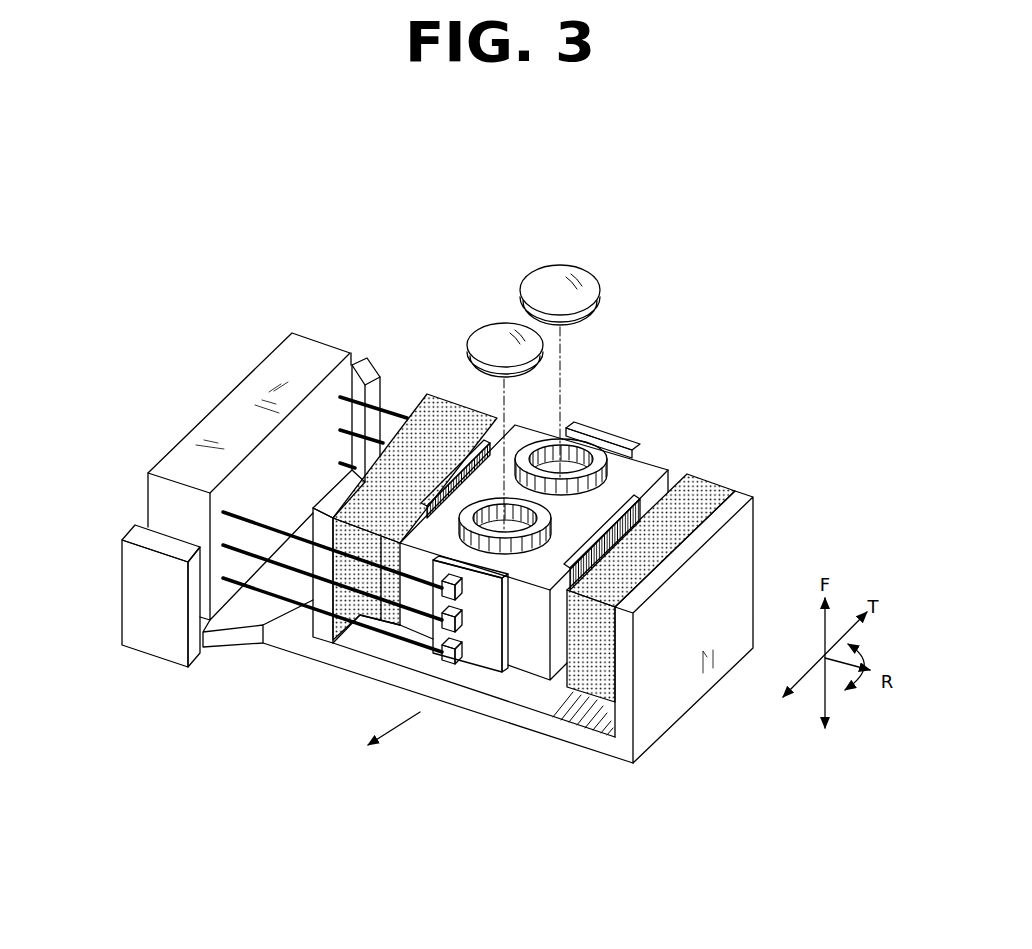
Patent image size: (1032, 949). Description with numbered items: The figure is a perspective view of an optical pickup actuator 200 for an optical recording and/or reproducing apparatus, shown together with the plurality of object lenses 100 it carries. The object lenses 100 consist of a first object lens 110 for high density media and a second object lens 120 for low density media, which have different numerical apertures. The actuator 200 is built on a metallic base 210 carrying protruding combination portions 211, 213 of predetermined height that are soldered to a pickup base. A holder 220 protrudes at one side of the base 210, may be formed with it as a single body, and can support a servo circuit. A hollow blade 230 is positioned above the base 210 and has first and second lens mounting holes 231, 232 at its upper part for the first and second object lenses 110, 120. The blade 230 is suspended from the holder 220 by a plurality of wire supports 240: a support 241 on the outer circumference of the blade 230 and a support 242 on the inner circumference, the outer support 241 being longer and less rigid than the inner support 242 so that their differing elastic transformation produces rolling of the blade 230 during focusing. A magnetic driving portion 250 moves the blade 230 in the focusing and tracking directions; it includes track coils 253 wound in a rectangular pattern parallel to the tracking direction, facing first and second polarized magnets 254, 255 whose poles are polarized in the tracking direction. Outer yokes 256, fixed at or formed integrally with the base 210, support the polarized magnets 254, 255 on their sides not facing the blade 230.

The object lenses 100 is at (552, 247).
The first object lens 110 is at (594, 280).
The second object lens 120 is at (492, 328).
The actuator 200 is at (693, 352).
The base 210 is at (338, 657).
The combination portion 211 is at (128, 572).
The combination portion 213 is at (362, 372).
The holder 220 is at (216, 410).
The blade 230 is at (620, 463).
The first lens mounting hole 231 is at (585, 456).
The second lens mounting hole 232 is at (501, 500).
The supports 240 is at (396, 398).
The support 241 is at (352, 382).
The support 242 is at (258, 592).
The magnetic driving portion 250 is at (736, 475).
The track coil 253 is at (623, 497).
The first polarized magnet 254 is at (718, 478).
The second polarized magnet 255 is at (462, 405).
The outer yoke 256 is at (632, 710).